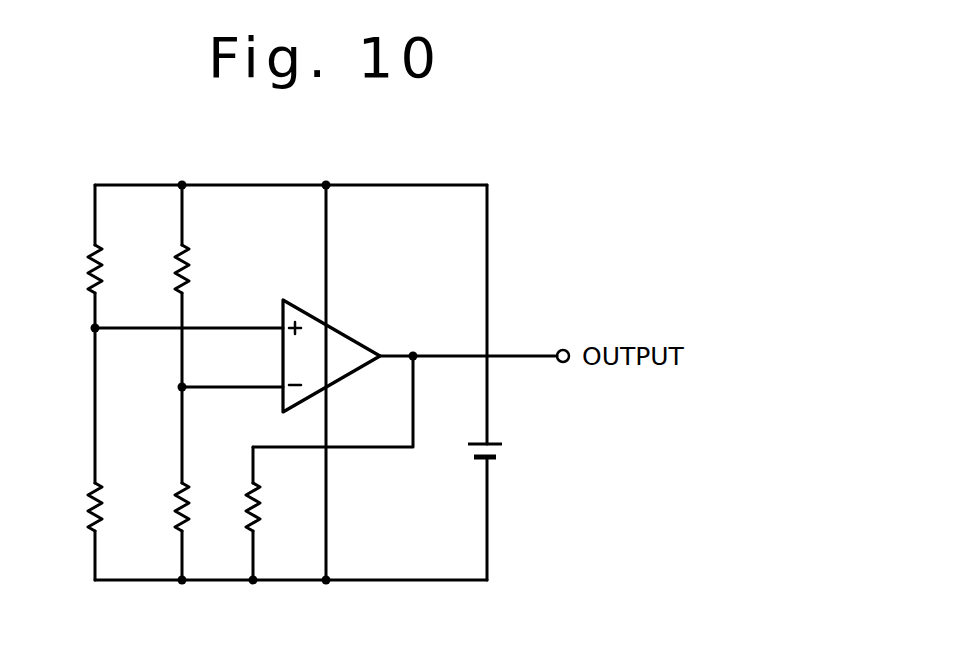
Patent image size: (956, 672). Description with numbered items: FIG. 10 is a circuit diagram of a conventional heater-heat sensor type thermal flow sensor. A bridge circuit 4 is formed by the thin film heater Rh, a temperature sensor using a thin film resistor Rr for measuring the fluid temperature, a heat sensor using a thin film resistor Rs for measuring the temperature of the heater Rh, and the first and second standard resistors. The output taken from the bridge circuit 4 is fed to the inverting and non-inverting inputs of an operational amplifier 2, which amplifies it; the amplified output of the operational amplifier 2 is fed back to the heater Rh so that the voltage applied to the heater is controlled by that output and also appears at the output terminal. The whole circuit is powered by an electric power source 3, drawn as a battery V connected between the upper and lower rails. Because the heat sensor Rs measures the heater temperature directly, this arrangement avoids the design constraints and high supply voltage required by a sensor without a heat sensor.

The operational amplifier 2 is at (350, 339).
The electric power source 3 is at (500, 453).
The bridge circuit 4 is at (127, 472).